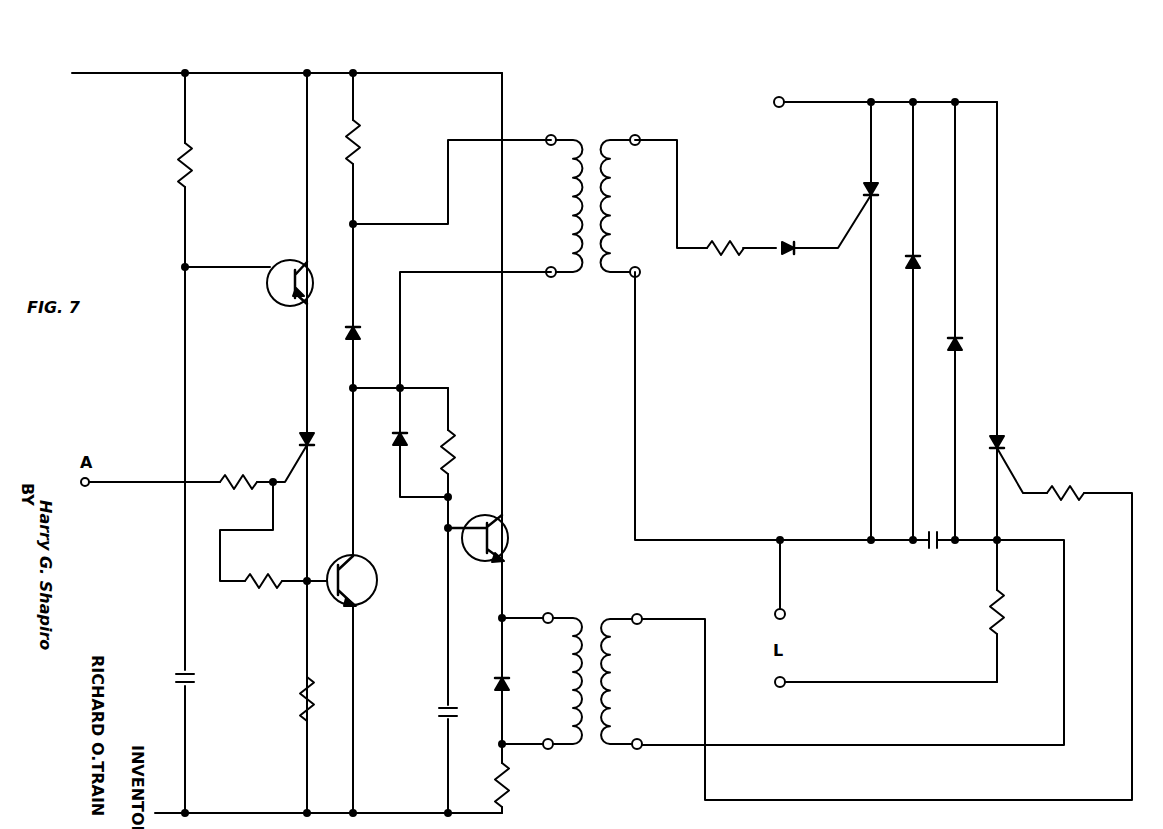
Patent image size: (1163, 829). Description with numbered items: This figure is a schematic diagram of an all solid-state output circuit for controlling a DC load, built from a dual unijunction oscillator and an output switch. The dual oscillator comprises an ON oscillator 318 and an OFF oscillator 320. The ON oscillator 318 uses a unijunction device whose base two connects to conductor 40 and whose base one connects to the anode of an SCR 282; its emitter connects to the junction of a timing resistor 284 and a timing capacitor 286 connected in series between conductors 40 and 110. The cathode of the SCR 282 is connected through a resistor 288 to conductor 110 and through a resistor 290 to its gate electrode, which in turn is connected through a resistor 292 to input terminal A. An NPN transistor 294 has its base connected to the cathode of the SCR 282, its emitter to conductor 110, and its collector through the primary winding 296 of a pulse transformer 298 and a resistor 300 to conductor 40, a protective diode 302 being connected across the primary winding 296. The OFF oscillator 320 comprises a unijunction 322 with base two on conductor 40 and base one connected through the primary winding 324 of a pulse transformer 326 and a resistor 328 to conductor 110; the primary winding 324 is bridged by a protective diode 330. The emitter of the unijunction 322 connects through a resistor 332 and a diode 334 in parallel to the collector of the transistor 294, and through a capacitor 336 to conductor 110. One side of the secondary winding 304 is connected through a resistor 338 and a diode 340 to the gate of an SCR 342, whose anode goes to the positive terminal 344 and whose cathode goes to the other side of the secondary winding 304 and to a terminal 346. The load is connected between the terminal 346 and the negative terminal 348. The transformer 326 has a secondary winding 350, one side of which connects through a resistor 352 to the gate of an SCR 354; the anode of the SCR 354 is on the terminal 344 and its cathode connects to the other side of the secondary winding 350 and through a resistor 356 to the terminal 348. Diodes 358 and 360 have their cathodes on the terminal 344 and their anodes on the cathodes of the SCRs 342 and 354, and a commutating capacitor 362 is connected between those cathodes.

The conductor 40 is at (100, 73).
The conductor 110 is at (185, 813).
The SCR 282 is at (298, 260).
The timing resistor 284 is at (192, 168).
The timing capacitor 286 is at (194, 676).
The resistor 288 is at (298, 704).
The resistor 290 is at (262, 588).
The resistor 292 is at (243, 474).
The NPN transistor 294 is at (370, 598).
The primary winding 296 is at (570, 219).
The pulse transformer 298 is at (590, 185).
The resistor 300 is at (360, 145).
The protective diode 302 is at (345, 338).
The secondary winding 304 is at (612, 212).
The ON oscillator 318 is at (235, 334).
The OFF oscillator 320 is at (471, 587).
The unijunction 322 is at (508, 545).
The primary winding 324 is at (568, 665).
The pulse transformer 326 is at (585, 662).
The resistor 328 is at (509, 785).
The protective diode 330 is at (510, 685).
The resistor 332 is at (462, 445).
The diode 334 is at (392, 440).
The capacitor 336 is at (440, 718).
The resistor 338 is at (724, 254).
The diode 340 is at (790, 256).
The SCR 342 is at (864, 188).
The terminal 344 is at (782, 96).
The terminal 346 is at (786, 611).
The terminal 348 is at (784, 687).
The secondary winding 350 is at (612, 682).
The resistor 352 is at (1066, 487).
The SCR 354 is at (1005, 445).
The resistor 356 is at (1004, 618).
The diode 358 is at (906, 268).
The diode 360 is at (963, 343).
The commutating capacitor 362 is at (927, 548).